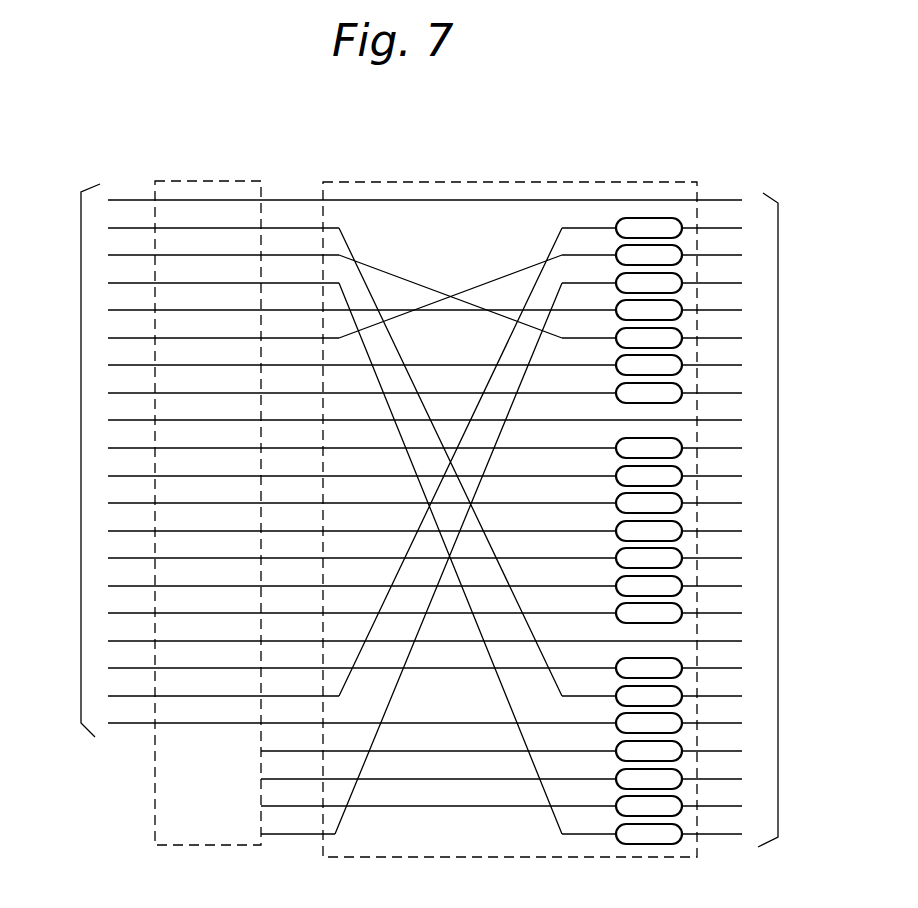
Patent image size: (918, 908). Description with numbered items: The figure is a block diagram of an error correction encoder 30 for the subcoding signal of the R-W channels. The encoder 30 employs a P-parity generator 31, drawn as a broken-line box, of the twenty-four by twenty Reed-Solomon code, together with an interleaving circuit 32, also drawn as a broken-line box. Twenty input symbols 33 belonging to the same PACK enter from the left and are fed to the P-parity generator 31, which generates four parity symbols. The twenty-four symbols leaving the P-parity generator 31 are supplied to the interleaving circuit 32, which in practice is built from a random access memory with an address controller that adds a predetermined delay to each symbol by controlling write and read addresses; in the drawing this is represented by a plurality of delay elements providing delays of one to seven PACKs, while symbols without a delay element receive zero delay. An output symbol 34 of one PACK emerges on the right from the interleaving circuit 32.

The error correction encoder 30 is at (374, 127).
The P-parity generator 31 is at (218, 181).
The interleaving circuit 32 is at (538, 182).
The input symbols 33 is at (80, 248).
The output symbol 34 is at (779, 256).